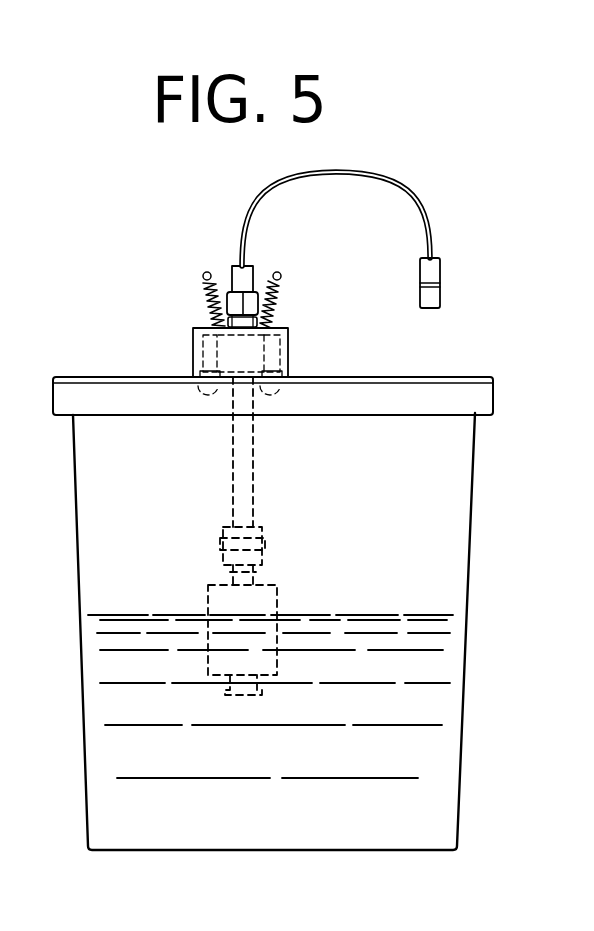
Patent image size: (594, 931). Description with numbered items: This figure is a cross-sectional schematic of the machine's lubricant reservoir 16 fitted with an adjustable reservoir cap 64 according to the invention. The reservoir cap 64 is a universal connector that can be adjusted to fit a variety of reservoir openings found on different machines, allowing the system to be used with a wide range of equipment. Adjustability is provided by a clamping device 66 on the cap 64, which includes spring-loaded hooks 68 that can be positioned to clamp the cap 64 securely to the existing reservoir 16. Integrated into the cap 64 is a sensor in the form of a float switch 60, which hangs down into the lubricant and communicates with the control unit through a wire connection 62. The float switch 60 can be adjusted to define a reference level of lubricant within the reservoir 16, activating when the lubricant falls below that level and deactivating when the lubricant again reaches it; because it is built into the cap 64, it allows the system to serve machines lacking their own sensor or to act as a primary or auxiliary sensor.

The reservoir 16 is at (496, 478).
The float switch 60 is at (279, 593).
The wire connection 62 is at (431, 238).
The reservoir cap 64 is at (184, 328).
The clamping device 66 is at (277, 303).
The spring-loaded hooks 68 is at (204, 273).